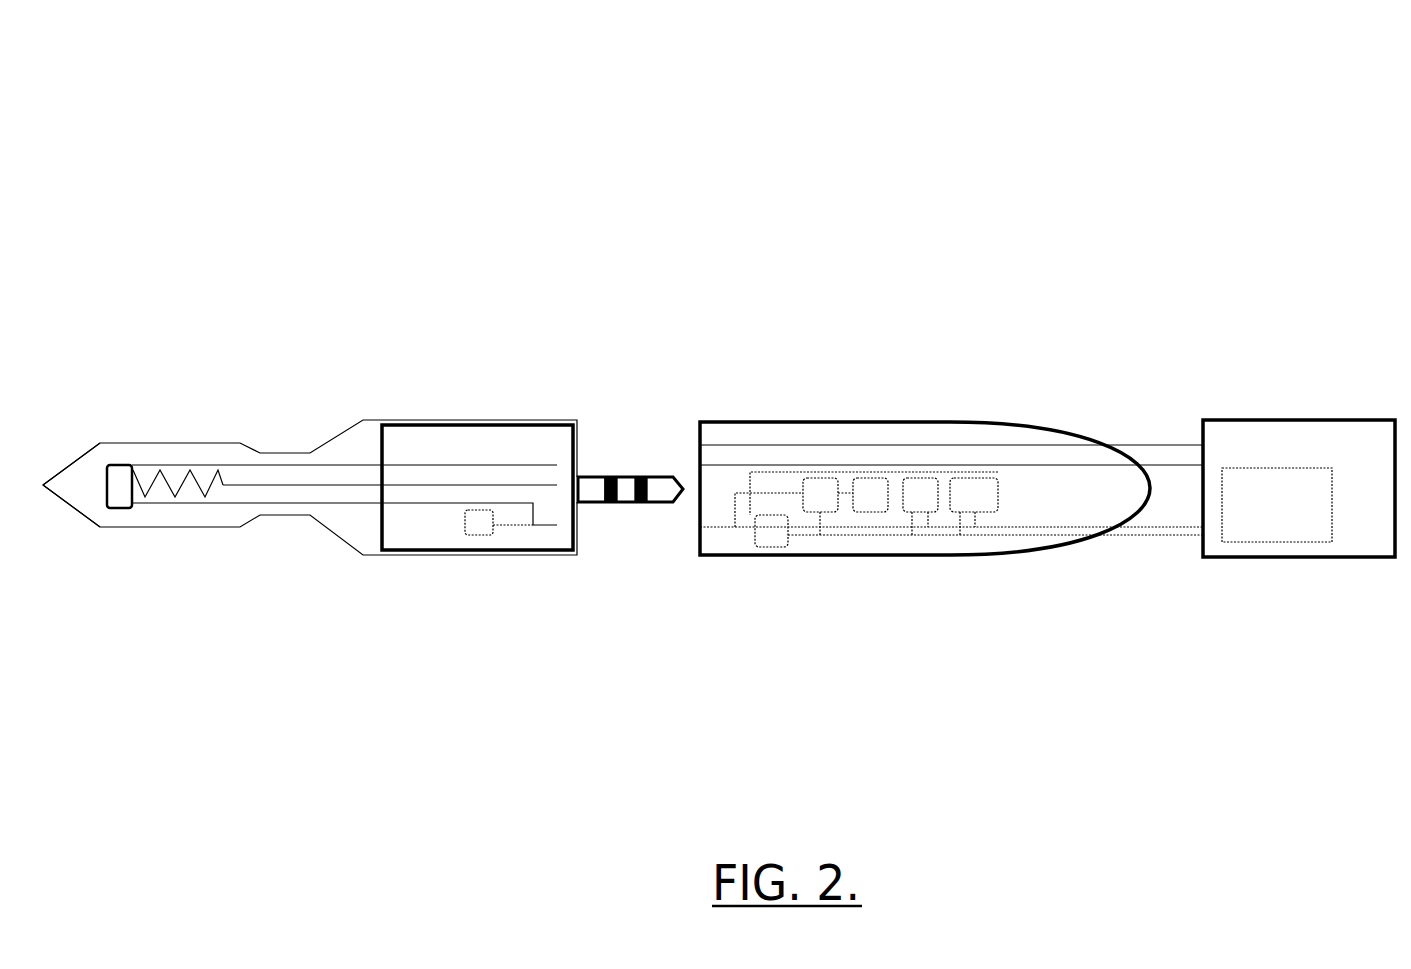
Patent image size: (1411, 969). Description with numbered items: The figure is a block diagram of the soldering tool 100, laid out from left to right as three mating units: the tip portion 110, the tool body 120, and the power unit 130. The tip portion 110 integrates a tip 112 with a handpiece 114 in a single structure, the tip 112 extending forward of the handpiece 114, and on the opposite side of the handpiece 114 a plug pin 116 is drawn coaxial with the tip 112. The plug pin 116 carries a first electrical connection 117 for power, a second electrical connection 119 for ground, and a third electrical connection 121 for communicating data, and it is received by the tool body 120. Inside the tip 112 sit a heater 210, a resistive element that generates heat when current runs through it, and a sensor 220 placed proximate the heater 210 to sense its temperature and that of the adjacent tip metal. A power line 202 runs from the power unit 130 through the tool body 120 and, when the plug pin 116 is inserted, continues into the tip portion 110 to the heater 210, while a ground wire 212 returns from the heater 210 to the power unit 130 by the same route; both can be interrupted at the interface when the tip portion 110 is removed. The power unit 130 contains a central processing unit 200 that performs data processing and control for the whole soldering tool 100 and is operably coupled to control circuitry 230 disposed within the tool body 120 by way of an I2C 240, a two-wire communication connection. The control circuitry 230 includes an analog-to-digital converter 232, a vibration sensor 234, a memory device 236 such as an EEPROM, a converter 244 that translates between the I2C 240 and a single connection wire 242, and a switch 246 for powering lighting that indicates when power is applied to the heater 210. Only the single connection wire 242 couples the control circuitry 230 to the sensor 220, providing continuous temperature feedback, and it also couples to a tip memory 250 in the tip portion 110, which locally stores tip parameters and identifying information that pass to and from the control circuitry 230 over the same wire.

The soldering tool 100 is at (220, 130).
The tip portion 110 is at (277, 625).
The tip 112 is at (73, 463).
The handpiece 114 is at (412, 550).
The plug pin 116 is at (676, 472).
The first electrical connection 117 is at (588, 477).
The second electrical connection 119 is at (662, 492).
The tool body 120 is at (980, 408).
The third electrical connection 121 is at (613, 477).
The power unit 130 is at (1365, 555).
The central processing unit (CPU) 200 is at (1238, 548).
The power line 202 is at (513, 485).
The heater 210 is at (180, 480).
The ground wire 212 is at (487, 467).
The sensor 220 is at (115, 508).
The control circuitry 230 is at (768, 472).
The analog-to-digital (AD) converter 232 is at (810, 505).
The vibration sensor 234 is at (863, 480).
The memory device 236 is at (985, 510).
The I2C 240 is at (1168, 523).
The connection wire 242 is at (540, 525).
The converter 244 is at (765, 547).
The switch 246 is at (932, 510).
The tip memory 250 is at (478, 532).